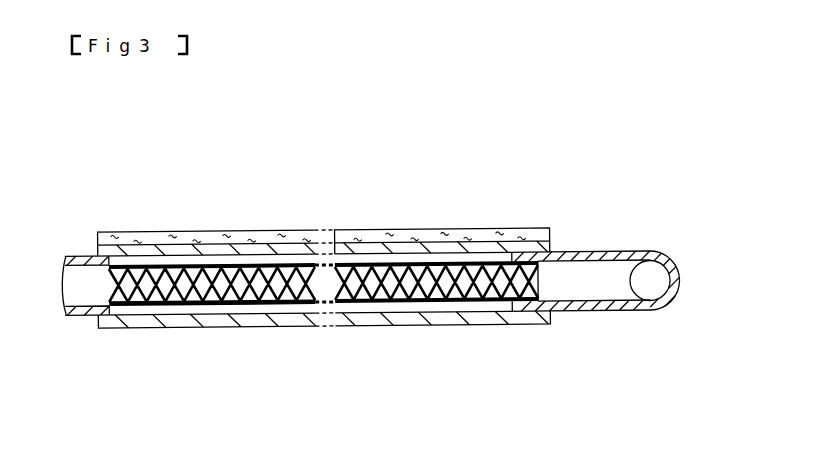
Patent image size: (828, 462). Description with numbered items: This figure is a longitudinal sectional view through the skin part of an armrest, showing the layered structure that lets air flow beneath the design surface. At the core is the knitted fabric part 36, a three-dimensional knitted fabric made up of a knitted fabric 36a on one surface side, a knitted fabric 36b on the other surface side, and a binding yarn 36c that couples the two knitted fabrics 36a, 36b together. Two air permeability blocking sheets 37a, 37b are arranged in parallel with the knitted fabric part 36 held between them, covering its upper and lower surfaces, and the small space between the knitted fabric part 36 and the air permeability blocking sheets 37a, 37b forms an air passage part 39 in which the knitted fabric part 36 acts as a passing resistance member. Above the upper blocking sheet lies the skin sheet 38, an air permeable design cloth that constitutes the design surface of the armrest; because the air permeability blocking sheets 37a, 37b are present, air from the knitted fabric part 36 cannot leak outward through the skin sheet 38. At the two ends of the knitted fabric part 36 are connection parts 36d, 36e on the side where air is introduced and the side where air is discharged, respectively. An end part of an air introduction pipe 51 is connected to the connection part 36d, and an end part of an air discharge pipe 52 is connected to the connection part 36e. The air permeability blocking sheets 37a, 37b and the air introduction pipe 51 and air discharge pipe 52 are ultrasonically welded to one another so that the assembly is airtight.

The knitted fabric part 36 is at (331, 270).
The knitted fabric 36a is at (212, 270).
The knitted fabric 36b is at (184, 306).
The binding yarn 36c is at (147, 266).
The connection part 36d is at (133, 308).
The connection part 36e is at (517, 304).
The air permeability blocking sheet 37a is at (372, 247).
The air permeability blocking sheet 37b is at (368, 316).
The skin sheet 38 is at (482, 237).
The air passage part 39 is at (440, 318).
The air introduction pipe 51 is at (83, 257).
The air discharge pipe 52 is at (622, 252).